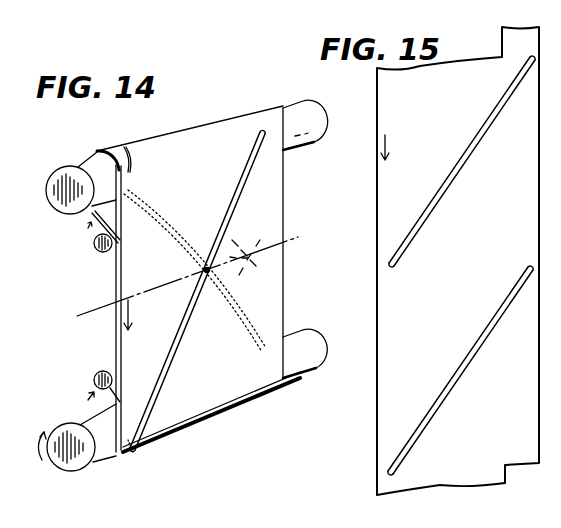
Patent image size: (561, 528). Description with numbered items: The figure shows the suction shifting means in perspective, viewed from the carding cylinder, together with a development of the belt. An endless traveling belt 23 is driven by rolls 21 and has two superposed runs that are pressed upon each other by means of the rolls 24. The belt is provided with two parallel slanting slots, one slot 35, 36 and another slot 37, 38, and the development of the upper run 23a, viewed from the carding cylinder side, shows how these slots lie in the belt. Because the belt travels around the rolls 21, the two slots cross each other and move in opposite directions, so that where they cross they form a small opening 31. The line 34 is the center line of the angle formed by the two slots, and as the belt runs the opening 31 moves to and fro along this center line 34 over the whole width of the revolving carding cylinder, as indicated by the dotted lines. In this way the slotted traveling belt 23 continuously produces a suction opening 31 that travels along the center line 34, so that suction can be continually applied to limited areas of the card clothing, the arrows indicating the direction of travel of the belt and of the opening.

In FIG. 14, the rolls 21 is at (57, 200).
In FIG. 14, the endless traveling belt 23 is at (274, 320).
In FIG. 15, the upper run 23a is at (397, 407).
In FIG. 14, the rolls 24 is at (97, 250).
In FIG. 14, the opening 31 is at (207, 266).
In FIG. 14, the center line 34 is at (180, 278).
In FIG. 14, the slot end 35 is at (138, 454).
In FIG. 15, the slot end 35 is at (409, 270).
In FIG. 14, the slot end 36 is at (197, 290).
In FIG. 15, the slot end 36 is at (462, 154).
In FIG. 14, the slot end 37 is at (138, 163).
In FIG. 15, the slot end 37 is at (411, 473).
In FIG. 14, the slot end 38 is at (197, 281).
In FIG. 15, the slot end 38 is at (460, 366).